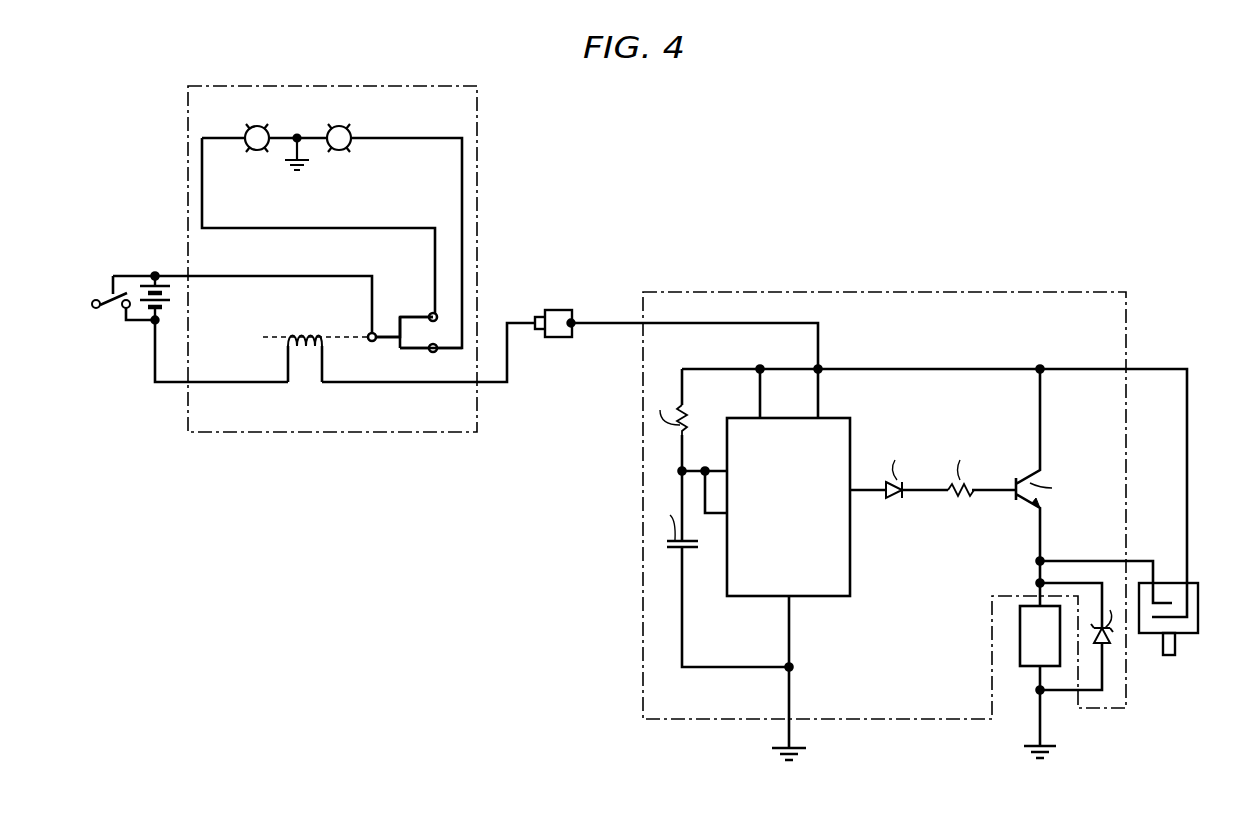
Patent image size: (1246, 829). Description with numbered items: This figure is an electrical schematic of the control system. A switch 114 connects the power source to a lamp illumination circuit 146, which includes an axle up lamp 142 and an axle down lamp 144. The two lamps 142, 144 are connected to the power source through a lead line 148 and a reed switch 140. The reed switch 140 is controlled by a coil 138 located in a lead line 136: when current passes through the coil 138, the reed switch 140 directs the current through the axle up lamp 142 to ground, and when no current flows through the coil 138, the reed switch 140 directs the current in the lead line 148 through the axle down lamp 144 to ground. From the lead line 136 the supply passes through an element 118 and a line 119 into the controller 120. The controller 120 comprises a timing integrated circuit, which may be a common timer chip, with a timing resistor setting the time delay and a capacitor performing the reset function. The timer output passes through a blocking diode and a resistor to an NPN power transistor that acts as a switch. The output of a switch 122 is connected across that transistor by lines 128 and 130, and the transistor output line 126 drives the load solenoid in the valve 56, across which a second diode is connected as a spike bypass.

The valve 56 is at (1030, 598).
The switch 114 is at (110, 300).
The fuse 118 is at (543, 312).
The power lead 119 is at (606, 322).
The controller 120 is at (1068, 292).
The switch 122 is at (1196, 583).
The output lead 126 is at (1036, 578).
The lead to pressure switch 128 is at (1150, 368).
The lead from pressure switch 130 is at (1141, 560).
The lead line 136 is at (168, 383).
The coil 138 is at (305, 355).
The reed switch 140 is at (418, 350).
The axle up lamp 142 is at (252, 125).
The axle down lamp 144 is at (334, 125).
The lamp illumination circuit 146 is at (428, 86).
The lead line 148 is at (145, 275).